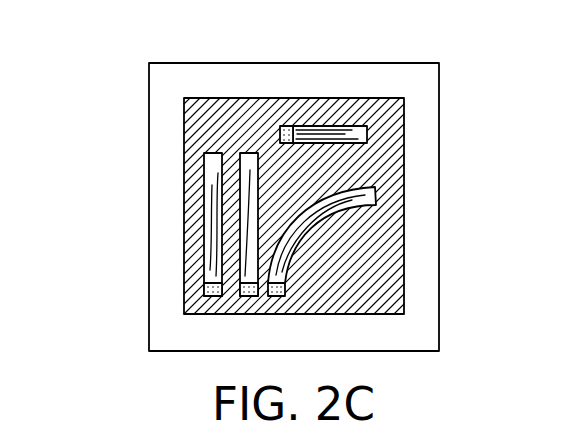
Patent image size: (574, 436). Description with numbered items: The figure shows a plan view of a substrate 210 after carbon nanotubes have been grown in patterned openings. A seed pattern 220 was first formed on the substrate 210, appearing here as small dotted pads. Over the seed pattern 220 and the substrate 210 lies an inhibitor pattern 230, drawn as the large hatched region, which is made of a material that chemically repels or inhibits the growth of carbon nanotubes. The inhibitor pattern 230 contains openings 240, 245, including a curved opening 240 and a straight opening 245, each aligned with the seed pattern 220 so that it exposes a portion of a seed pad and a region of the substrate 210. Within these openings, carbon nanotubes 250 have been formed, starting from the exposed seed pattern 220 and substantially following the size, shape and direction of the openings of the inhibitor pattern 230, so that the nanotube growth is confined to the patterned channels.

The substrate 210 is at (177, 63).
The seed pattern 220 is at (285, 126).
The inhibitor pattern 230 is at (340, 98).
The opening 240 is at (376, 197).
The opening 245 is at (206, 159).
The carbon nanotubes 250 is at (208, 215).